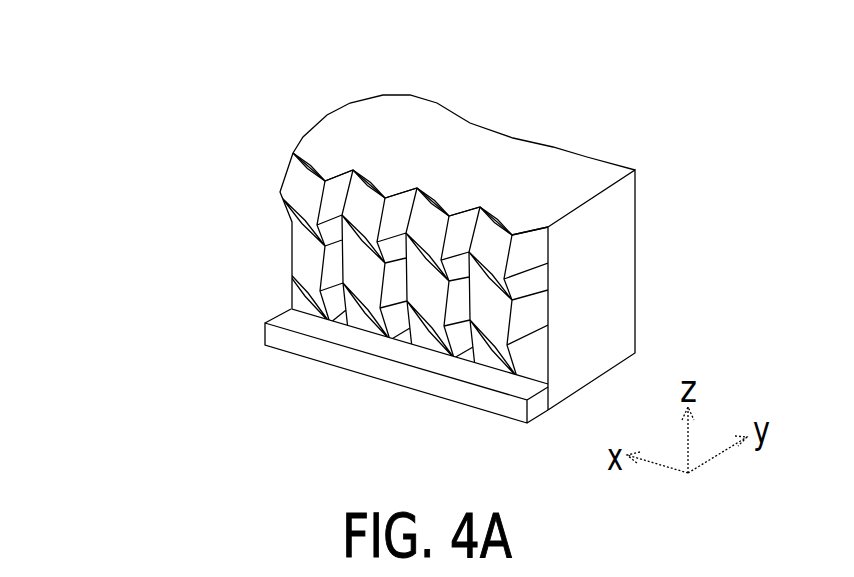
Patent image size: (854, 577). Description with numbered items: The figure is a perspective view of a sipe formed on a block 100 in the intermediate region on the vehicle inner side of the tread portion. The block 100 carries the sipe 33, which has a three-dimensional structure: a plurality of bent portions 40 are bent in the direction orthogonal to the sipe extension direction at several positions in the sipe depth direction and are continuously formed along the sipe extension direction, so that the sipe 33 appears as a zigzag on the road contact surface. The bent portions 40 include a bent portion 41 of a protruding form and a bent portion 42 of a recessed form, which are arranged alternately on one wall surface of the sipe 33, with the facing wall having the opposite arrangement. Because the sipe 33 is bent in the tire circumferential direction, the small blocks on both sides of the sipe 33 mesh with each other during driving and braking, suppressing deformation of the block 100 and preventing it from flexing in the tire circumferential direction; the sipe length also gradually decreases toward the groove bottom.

The block 100 is at (365, 132).
The sipe 33 is at (433, 197).
The bent portions 40 is at (88, 192).
The bent portion of a protruding form 41 is at (287, 210).
The bent portion of a recessed form 42 is at (300, 235).